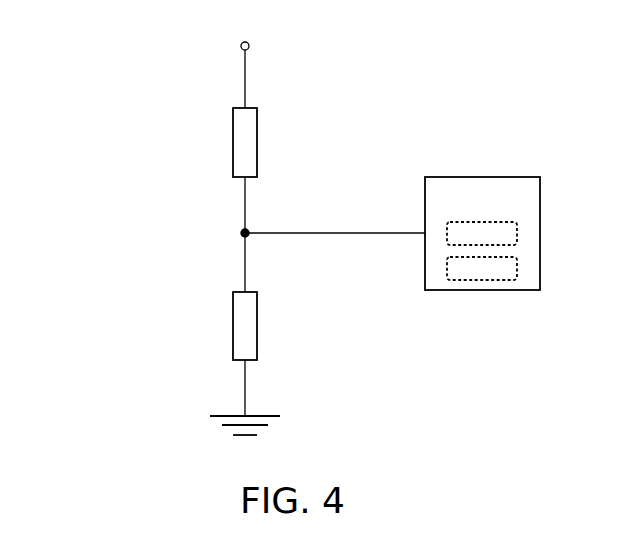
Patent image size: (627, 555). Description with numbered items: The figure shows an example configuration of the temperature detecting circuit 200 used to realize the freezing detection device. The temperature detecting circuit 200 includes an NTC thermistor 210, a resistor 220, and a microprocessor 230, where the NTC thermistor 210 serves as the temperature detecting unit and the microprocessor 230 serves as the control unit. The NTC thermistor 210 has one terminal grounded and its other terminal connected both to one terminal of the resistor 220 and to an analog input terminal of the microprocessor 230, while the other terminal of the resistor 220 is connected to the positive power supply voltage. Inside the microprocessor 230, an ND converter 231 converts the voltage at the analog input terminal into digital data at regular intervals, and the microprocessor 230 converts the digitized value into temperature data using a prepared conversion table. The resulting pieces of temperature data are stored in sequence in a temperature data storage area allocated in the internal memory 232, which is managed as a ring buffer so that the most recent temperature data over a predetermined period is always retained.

The temperature detecting circuit 200 is at (86, 76).
The NTC thermistor 210 is at (245, 323).
The resistor 220 is at (243, 140).
The microprocessor 230 is at (478, 197).
The ND converter 231 is at (517, 235).
The internal memory 232 is at (517, 268).